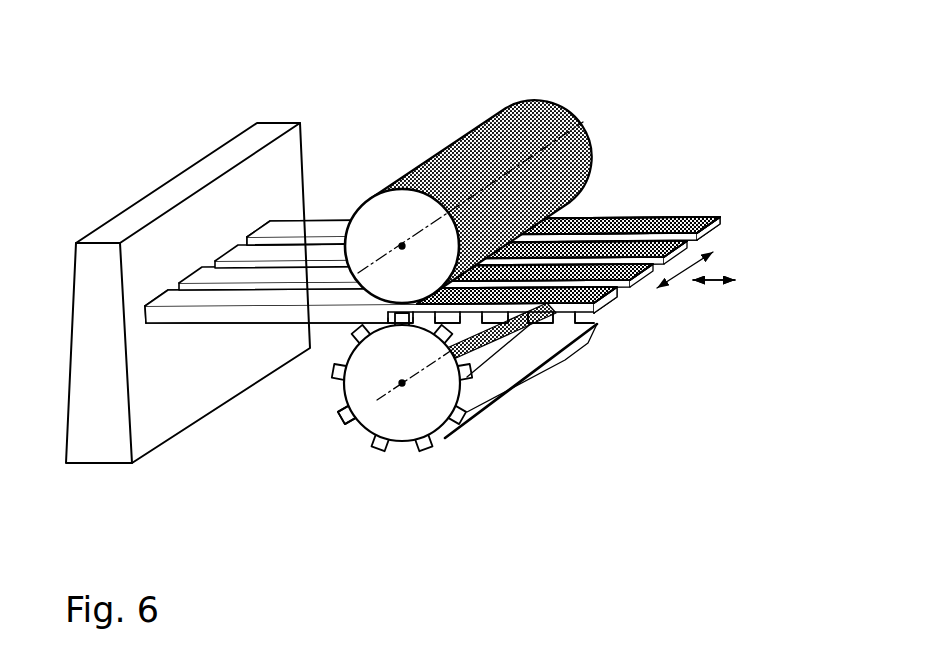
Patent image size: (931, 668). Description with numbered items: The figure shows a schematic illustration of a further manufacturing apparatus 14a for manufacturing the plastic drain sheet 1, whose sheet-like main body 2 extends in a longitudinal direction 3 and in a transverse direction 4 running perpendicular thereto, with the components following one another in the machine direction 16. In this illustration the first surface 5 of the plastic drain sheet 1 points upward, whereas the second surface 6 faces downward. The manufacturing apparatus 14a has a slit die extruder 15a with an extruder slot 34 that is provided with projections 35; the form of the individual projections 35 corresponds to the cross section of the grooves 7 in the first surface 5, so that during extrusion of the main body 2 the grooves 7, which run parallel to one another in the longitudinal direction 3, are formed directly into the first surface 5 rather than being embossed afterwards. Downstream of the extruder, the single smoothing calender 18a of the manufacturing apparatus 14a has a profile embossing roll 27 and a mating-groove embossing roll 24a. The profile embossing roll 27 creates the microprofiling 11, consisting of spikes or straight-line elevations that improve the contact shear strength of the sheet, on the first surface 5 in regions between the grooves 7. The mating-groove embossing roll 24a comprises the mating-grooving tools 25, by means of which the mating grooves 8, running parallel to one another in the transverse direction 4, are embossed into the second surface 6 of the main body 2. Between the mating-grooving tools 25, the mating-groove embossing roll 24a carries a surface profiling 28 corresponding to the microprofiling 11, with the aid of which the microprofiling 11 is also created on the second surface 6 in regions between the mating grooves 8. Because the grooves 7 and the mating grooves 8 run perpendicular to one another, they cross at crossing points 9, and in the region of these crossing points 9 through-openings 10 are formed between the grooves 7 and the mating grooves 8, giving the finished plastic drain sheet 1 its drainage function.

The plastic drain sheet 1 is at (642, 208).
The sheet-like main body 2 is at (262, 315).
The longitudinal direction 3 is at (715, 283).
The transverse direction 4 is at (698, 267).
The first surface 5 is at (293, 226).
The second surface 6 is at (195, 329).
The grooves 7 is at (327, 242).
The mating grooves 8 is at (530, 318).
The crossing points 9 is at (568, 163).
The through-openings 10 is at (622, 284).
The microprofiling 11 is at (653, 216).
The manufacturing apparatus 14a is at (343, 94).
The slit die extruder 15a is at (135, 218).
The machine direction 16 is at (762, 310).
The smoothing calender 18a is at (372, 455).
The mating-groove embossing roll 24a is at (464, 427).
The mating-grooving tools 25 is at (348, 425).
The profile embossing roll 27 is at (468, 287).
The surface profiling 28 is at (515, 118).
The extruder slot 34 is at (232, 258).
The projections 35 is at (215, 267).